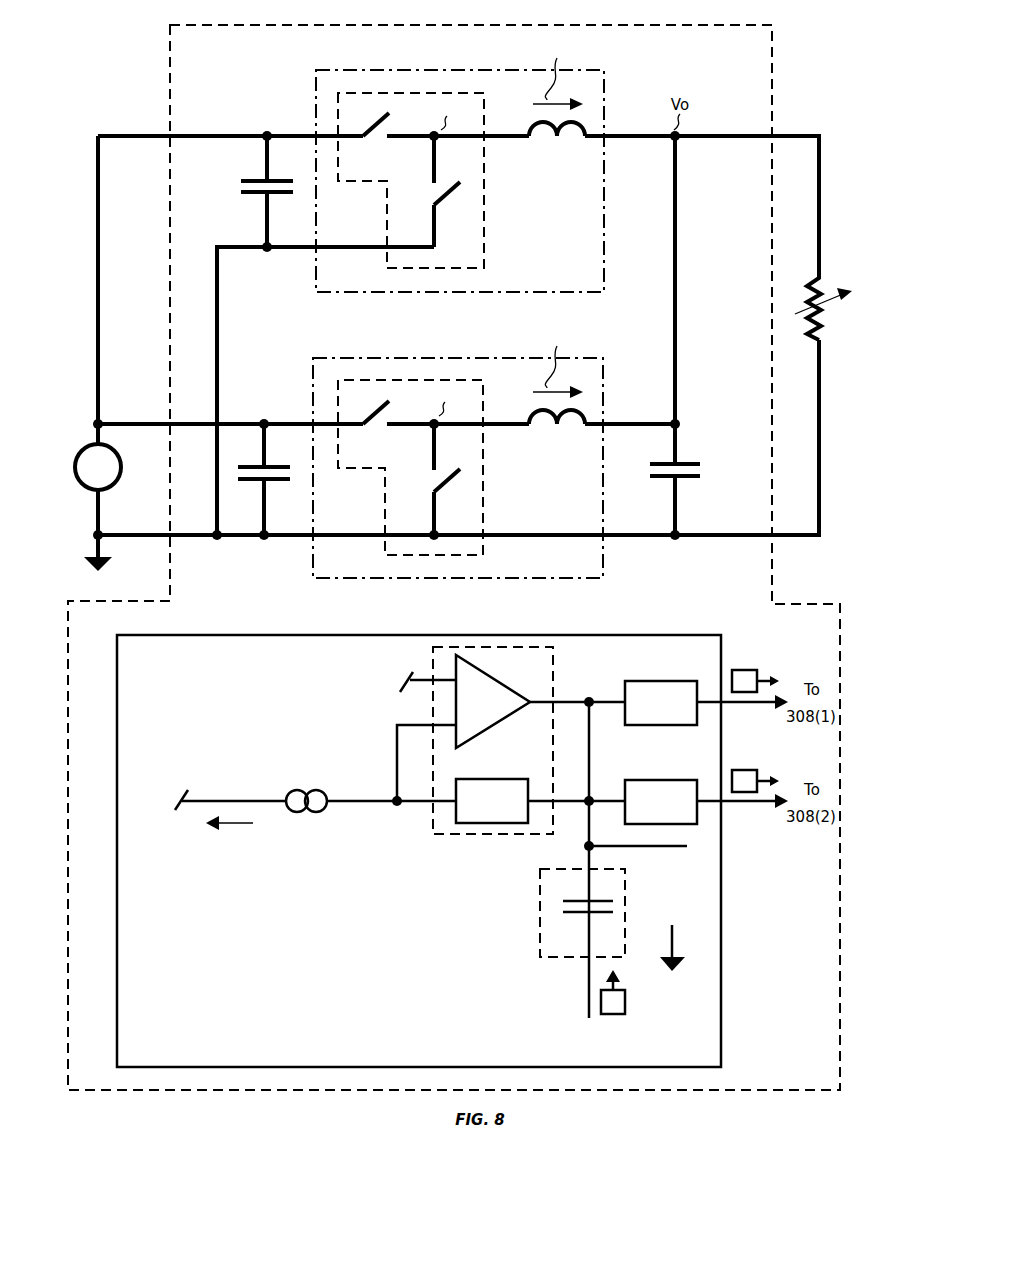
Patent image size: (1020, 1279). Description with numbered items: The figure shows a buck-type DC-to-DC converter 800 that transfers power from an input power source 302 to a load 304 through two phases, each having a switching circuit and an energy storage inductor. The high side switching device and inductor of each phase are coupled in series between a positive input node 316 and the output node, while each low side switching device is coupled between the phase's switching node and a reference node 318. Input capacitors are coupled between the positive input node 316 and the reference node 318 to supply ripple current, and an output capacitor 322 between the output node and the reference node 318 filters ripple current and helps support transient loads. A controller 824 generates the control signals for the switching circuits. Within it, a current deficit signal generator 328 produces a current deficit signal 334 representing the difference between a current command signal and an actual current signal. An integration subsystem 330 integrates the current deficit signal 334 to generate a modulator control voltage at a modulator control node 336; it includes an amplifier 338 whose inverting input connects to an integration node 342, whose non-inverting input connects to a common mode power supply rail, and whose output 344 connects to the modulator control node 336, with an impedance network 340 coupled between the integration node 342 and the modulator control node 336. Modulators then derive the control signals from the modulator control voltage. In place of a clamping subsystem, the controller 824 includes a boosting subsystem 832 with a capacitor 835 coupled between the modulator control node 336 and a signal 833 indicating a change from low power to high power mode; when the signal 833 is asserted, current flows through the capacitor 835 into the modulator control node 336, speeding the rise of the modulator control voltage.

The DC-to-DC converter 800 is at (772, 50).
The input power source 302 is at (80, 450).
The load 304 is at (830, 322).
The positive input node 316 is at (268, 133).
The reference node 318 is at (217, 539).
The output capacitor 322 is at (652, 490).
The current deficit signal generator 328 is at (309, 773).
The integration subsystem 330 is at (493, 740).
The current deficit signal 334 is at (233, 823).
The modulator control node 336 is at (590, 694).
The amplifier 338 is at (469, 713).
The impedance network 340 is at (497, 778).
The integration node 342 is at (395, 797).
The output 344 is at (546, 706).
The controller 824 is at (135, 1050).
The boosting subsystem 832 is at (556, 908).
The signal 833 is at (625, 1000).
The capacitor 835 is at (545, 900).